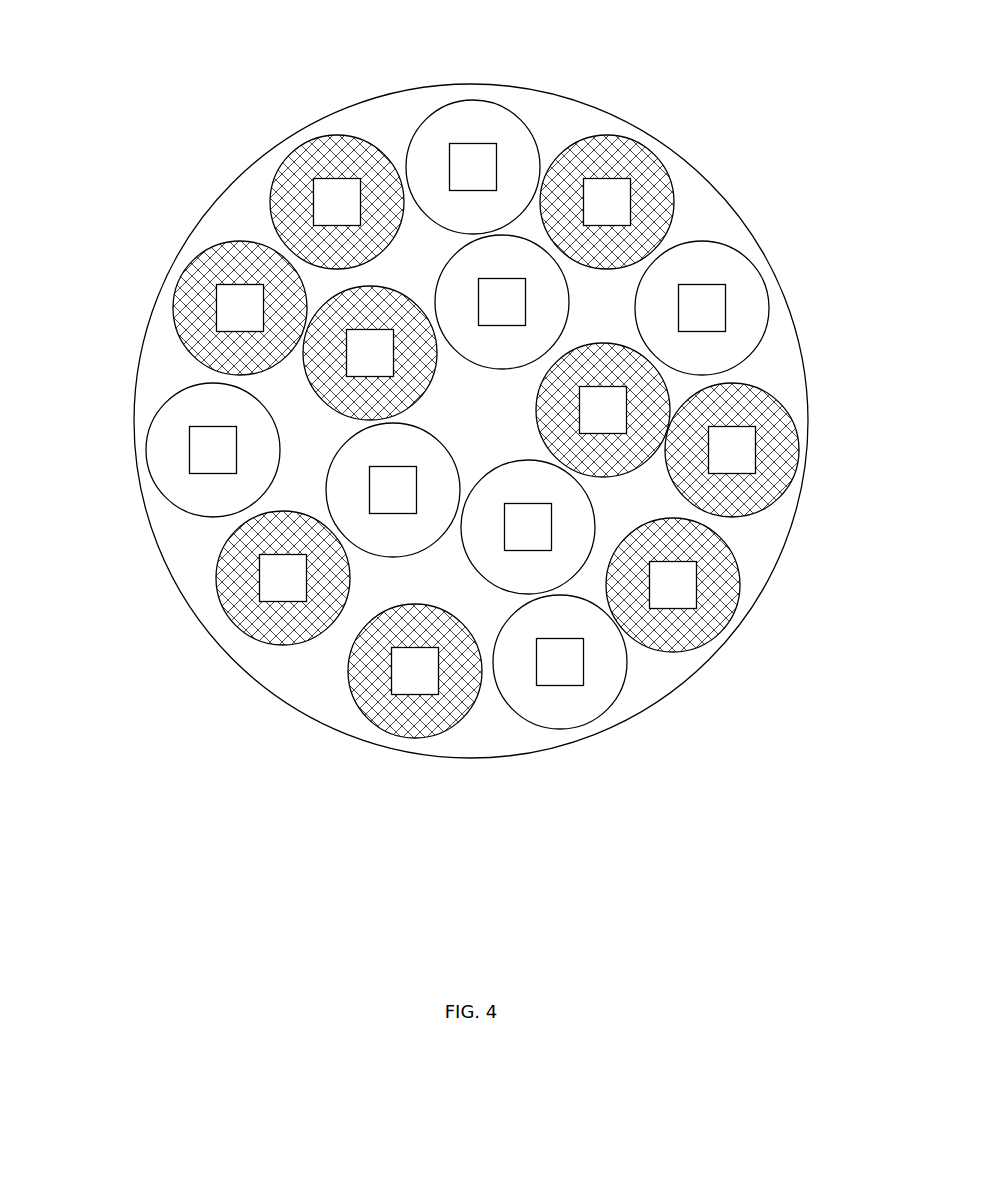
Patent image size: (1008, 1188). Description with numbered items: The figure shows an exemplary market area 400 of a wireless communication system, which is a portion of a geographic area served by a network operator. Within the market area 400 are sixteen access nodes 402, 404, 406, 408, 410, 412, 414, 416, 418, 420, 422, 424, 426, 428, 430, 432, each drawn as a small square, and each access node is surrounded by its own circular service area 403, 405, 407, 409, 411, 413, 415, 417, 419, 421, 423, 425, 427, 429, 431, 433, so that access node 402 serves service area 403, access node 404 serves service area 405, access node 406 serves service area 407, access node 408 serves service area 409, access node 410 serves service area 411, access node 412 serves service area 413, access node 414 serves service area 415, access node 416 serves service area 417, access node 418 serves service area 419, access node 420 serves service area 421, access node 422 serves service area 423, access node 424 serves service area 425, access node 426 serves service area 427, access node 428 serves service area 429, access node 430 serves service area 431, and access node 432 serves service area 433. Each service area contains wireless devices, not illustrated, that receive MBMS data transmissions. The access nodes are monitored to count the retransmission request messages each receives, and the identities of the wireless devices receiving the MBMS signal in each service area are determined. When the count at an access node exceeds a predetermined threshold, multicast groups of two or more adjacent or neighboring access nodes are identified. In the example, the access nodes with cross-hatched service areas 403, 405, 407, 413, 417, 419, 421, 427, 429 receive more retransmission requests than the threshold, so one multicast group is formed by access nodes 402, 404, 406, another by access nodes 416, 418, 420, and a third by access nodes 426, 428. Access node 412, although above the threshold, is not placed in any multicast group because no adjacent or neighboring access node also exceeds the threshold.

The market area 400 is at (617, 120).
The access node 402 is at (243, 305).
The service area 403 is at (240, 375).
The access node 404 is at (342, 203).
The service area 405 is at (367, 137).
The access node 406 is at (373, 355).
The service area 407 is at (338, 412).
The access node 408 is at (470, 167).
The service area 409 is at (517, 117).
The access node 410 is at (557, 263).
The service area 411 is at (505, 303).
The access node 412 is at (652, 252).
The service area 413 is at (610, 203).
The access node 414 is at (764, 283).
The service area 415 is at (705, 312).
The access node 416 is at (733, 448).
The service area 417 is at (791, 418).
The access node 418 is at (607, 403).
The service area 419 is at (661, 377).
The access node 420 is at (677, 586).
The service area 421 is at (727, 545).
The access node 422 is at (563, 663).
The service area 423 is at (627, 660).
The access node 424 is at (532, 527).
The service area 425 is at (595, 524).
The access node 426 is at (368, 715).
The service area 427 is at (413, 677).
The access node 428 is at (283, 573).
The service area 429 is at (248, 635).
The access node 430 is at (393, 492).
The service area 431 is at (383, 557).
The access node 432 is at (214, 452).
The service area 433 is at (192, 514).